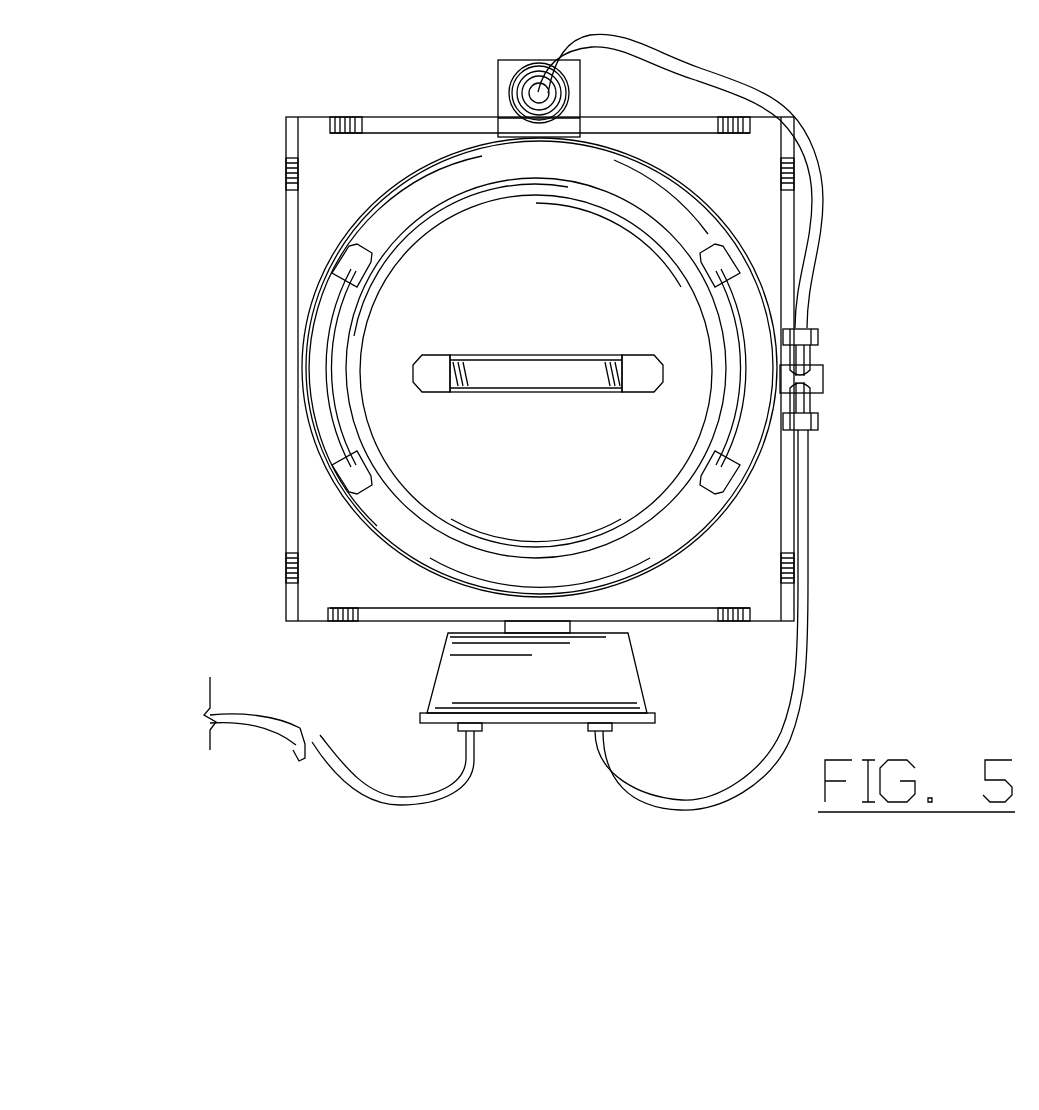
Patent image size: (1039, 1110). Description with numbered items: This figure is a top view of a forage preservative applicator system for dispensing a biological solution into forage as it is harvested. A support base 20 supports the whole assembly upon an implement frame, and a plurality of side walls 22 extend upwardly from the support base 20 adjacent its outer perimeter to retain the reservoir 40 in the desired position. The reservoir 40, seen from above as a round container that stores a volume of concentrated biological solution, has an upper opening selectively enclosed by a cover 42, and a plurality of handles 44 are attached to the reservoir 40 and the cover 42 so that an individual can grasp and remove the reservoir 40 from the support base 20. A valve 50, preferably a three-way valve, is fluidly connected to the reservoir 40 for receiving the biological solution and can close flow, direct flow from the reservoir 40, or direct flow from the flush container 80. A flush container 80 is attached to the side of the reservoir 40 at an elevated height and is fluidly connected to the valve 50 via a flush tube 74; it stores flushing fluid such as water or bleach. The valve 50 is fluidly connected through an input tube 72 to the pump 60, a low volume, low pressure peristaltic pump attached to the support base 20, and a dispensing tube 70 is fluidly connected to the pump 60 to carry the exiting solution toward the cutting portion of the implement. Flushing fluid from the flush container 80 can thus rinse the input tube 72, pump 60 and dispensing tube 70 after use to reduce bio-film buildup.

The support base 20 is at (940, 545).
The side walls 22 is at (135, 665).
The reservoir 40 is at (405, 503).
The cover 42 is at (413, 428).
The handles 44 is at (78, 359).
The valve 50 is at (972, 372).
The pump 60 is at (550, 680).
The dispensing tube 70 is at (295, 758).
The input tube 72 is at (918, 640).
The flush tube 74 is at (952, 193).
The flush container 80 is at (540, 93).